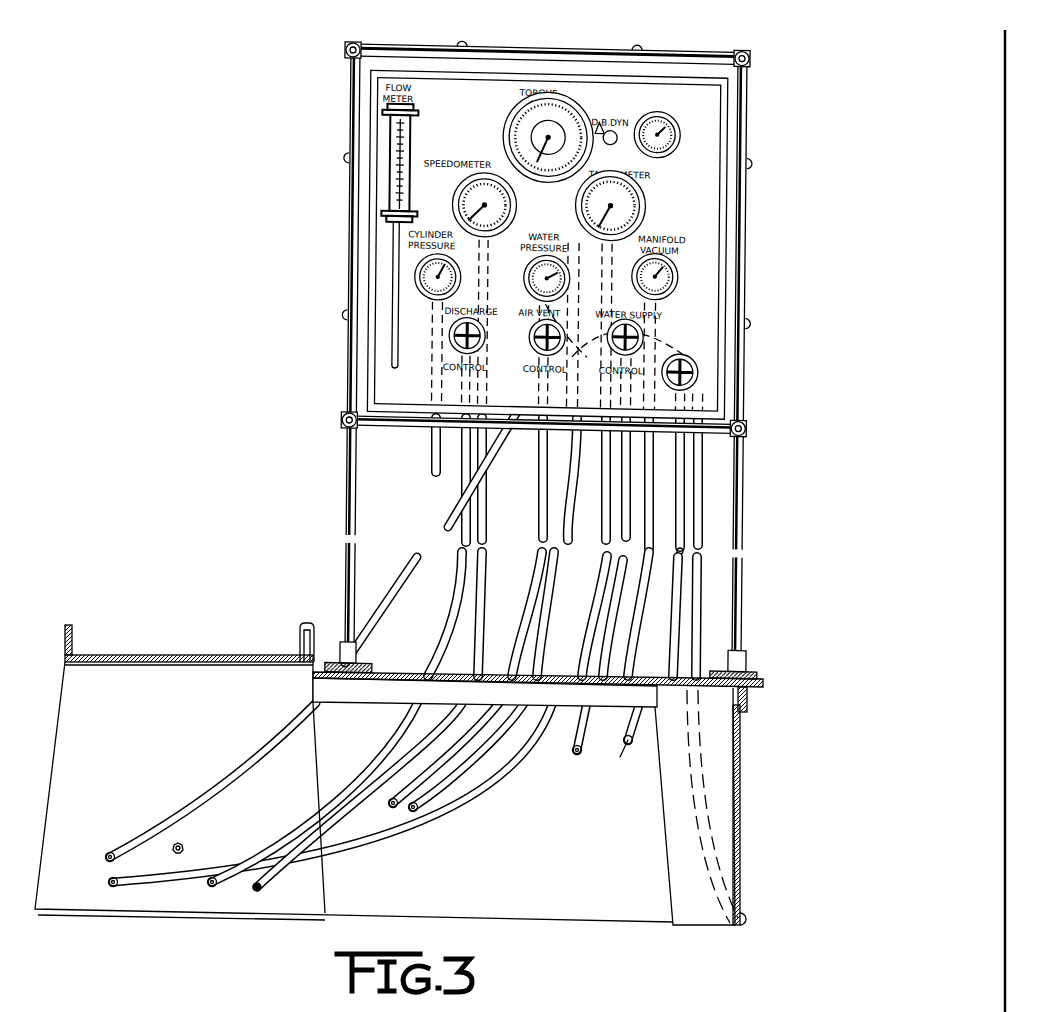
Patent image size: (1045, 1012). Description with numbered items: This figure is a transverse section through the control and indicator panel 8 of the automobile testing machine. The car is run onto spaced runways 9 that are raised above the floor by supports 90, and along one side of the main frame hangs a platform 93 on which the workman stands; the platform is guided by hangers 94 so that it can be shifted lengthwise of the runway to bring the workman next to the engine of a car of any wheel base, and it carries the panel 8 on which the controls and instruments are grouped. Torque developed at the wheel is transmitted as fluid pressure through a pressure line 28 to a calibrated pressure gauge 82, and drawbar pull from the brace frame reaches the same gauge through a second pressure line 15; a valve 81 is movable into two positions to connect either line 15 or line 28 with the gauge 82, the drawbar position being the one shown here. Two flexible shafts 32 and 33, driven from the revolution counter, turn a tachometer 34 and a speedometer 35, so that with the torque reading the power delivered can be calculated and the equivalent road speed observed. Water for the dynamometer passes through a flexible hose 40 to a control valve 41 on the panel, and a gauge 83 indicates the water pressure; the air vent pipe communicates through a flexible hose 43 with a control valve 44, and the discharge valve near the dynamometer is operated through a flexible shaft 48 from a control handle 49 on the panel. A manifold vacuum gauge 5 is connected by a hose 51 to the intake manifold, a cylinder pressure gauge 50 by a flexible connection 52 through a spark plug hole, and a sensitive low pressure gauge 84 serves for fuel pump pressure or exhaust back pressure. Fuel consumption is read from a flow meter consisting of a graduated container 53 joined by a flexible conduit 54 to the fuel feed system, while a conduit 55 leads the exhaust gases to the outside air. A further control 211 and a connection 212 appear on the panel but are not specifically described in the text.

The manifold vacuum gauge 5 is at (678, 278).
The panel 8 is at (682, 80).
The runways 9 is at (185, 656).
The pressure line 15 is at (625, 537).
The pressure line 28 is at (573, 492).
The flexible shaft 32 is at (603, 586).
The flexible shaft 33 is at (488, 584).
The tachometer 34 is at (648, 205).
The speedometer 35 is at (455, 195).
The flexible hose 40 is at (448, 527).
The control valve 41 is at (645, 337).
The flexible hose 43 is at (548, 612).
The control valve 44 is at (530, 340).
The pipe 48 is at (460, 605).
The control handle 49 is at (455, 346).
The cylinder pressure gauge 50 is at (416, 279).
The flexible conduit 51 is at (650, 554).
The flexible connection 52 is at (432, 452).
The graduated container 53 is at (412, 127).
The flexible conduit 54 is at (393, 347).
The conduit 55 is at (183, 848).
The valve 81 is at (612, 131).
The pressure gauge 82 is at (512, 112).
The water pressure gauge 83 is at (527, 280).
The low pressure gauge 84 is at (680, 135).
The supports 90 is at (112, 677).
The platform 93 is at (633, 672).
The hangers 94 is at (306, 625).
The control valve 211 is at (700, 374).
The pipe 212 is at (664, 621).